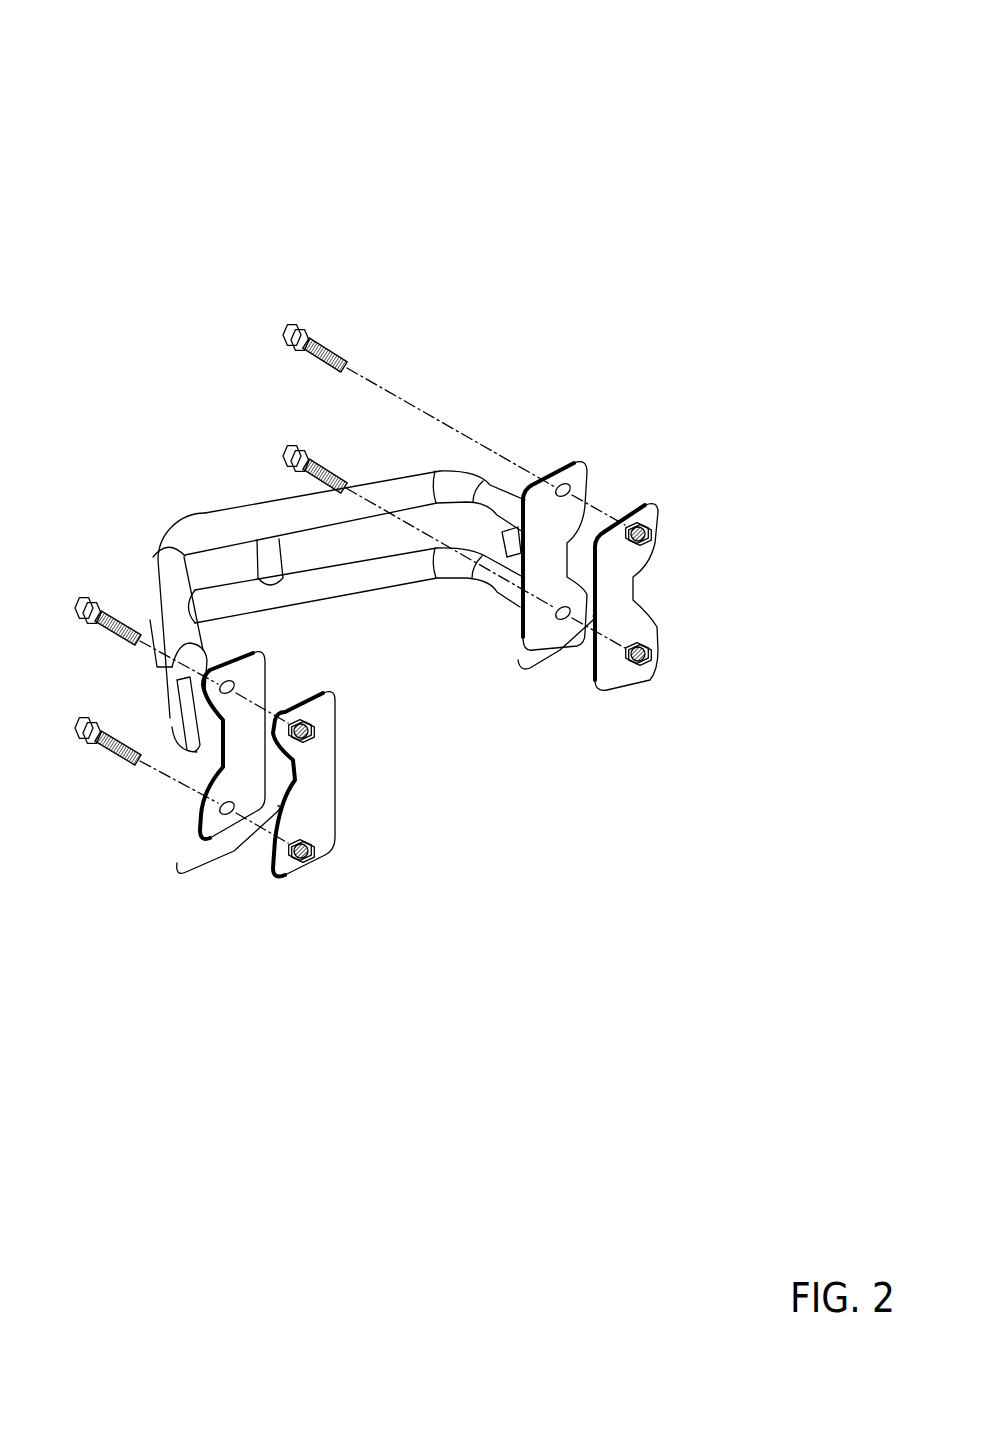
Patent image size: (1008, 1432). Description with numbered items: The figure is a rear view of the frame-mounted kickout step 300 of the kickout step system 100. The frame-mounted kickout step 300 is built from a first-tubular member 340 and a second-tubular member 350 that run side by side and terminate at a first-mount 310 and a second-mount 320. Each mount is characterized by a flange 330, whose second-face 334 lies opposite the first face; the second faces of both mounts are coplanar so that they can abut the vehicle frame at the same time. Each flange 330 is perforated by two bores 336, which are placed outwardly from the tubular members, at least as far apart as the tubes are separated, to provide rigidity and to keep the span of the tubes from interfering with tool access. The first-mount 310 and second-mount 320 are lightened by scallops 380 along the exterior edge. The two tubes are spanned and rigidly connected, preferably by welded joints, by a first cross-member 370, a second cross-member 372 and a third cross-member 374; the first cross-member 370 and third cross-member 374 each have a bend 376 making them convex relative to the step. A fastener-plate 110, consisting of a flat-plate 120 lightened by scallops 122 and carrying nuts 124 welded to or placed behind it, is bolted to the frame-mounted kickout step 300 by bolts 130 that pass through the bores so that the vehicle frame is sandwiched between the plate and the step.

The kickout step system 100 is at (731, 80).
The fastener-plate 110 is at (350, 670).
The flat-plate 120 is at (275, 872).
The scallops 122 is at (297, 804).
The nuts 124 is at (299, 864).
The bolts 130 is at (84, 730).
The frame-mounted kickout step 300 is at (797, 842).
The first-mount 310 is at (553, 643).
The second-mount 320 is at (235, 851).
The flange 330 is at (200, 822).
The second-face 334 is at (542, 633).
The bores 336 is at (567, 485).
The first-tubular member 340 is at (255, 507).
The second-tubular member 350 is at (393, 590).
The first cross-member 370 is at (502, 595).
The second cross-member 372 is at (273, 567).
The third cross-member 374 is at (177, 730).
The bend 376 is at (177, 697).
The scallops 380 is at (223, 747).